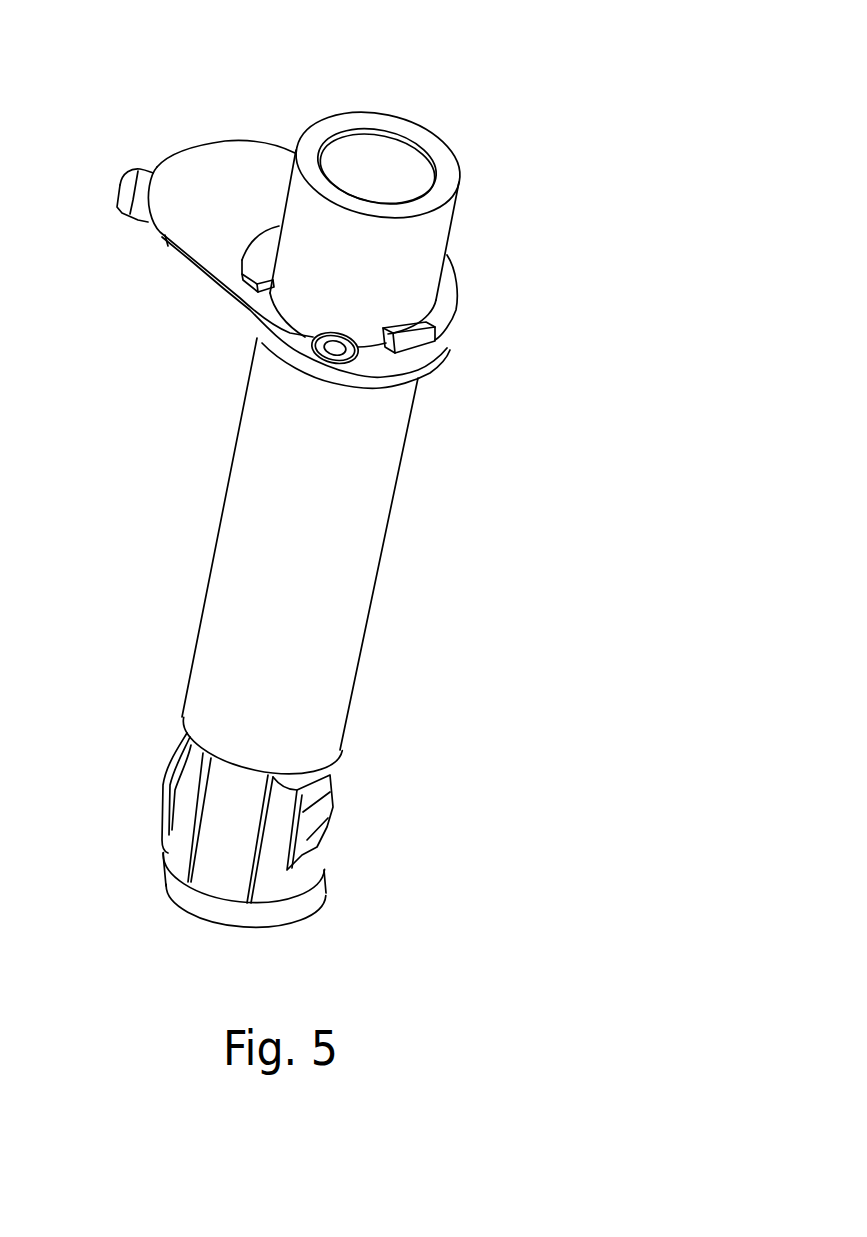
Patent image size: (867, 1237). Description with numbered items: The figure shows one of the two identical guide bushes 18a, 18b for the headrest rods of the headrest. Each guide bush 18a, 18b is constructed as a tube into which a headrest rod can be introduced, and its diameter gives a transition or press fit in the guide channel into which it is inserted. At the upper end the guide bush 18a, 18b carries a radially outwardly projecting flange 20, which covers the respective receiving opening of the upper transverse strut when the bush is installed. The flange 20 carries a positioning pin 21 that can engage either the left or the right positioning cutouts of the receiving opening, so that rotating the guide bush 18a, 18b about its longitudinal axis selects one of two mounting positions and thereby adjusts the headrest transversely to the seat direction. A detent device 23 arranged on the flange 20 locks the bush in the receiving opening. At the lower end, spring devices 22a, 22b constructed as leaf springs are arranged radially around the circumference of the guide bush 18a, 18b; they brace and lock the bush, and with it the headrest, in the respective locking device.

The first guide bush 18a is at (396, 168).
The second guide bush 18b is at (425, 98).
The flange 20 is at (238, 166).
The positioning pin 21 is at (138, 182).
The spring device 22a is at (185, 851).
The spring device 22b is at (268, 880).
The detent device 23 is at (358, 351).